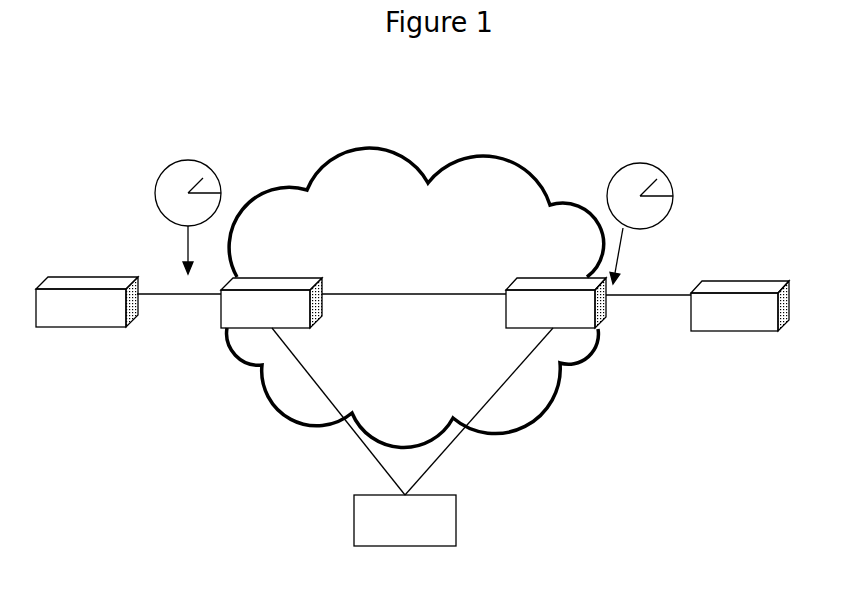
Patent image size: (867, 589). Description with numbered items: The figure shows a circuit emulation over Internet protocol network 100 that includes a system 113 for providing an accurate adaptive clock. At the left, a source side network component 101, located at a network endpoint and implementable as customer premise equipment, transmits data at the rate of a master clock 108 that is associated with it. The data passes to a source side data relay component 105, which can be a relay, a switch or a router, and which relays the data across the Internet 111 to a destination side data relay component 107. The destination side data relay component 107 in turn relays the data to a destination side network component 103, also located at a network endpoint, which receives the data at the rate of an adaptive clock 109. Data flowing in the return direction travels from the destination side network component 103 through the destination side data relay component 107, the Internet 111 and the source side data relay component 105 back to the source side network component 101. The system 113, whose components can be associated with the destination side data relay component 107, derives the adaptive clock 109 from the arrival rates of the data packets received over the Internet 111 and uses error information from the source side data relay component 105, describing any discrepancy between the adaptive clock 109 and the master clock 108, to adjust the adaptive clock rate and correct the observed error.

The circuit emulation over Internet protocol network 100 is at (270, 108).
The source side network component 101 is at (103, 268).
The destination side network component 103 is at (732, 273).
The source side data relay component 105 is at (288, 267).
The destination side data relay component 107 is at (542, 267).
The master clock 108 is at (172, 160).
The adaptive clock 109 is at (651, 155).
The Internet 111 is at (525, 160).
The system for providing an accurate adaptive clock 113 is at (391, 528).